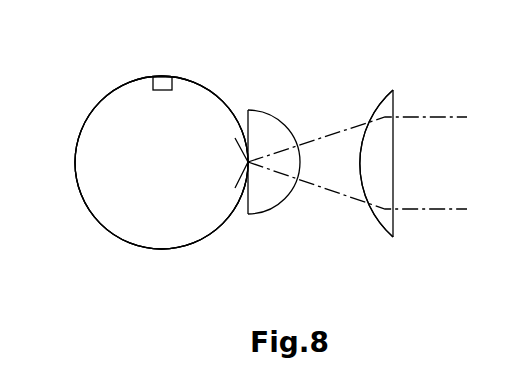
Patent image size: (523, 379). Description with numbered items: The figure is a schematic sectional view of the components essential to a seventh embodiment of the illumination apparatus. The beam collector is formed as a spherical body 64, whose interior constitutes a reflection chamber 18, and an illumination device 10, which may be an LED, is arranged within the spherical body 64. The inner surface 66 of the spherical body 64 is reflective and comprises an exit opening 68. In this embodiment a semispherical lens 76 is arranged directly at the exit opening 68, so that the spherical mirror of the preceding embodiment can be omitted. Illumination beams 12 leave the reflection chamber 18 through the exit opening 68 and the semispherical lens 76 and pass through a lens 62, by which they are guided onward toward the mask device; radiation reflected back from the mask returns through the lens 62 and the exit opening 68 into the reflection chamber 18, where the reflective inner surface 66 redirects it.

The illumination device 10 is at (165, 77).
The illumination beams 12 is at (347, 150).
The reflection chamber 18 is at (172, 177).
The lens 62 is at (389, 214).
The spherical body 64 is at (88, 84).
The inner surface 66 is at (84, 185).
The exit opening 68 is at (248, 162).
The semispherical lens 76 is at (273, 137).